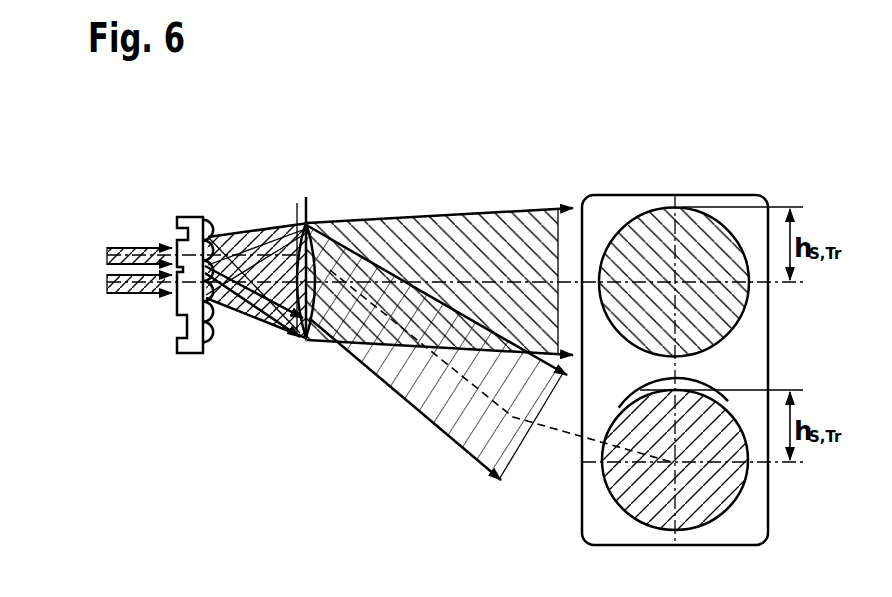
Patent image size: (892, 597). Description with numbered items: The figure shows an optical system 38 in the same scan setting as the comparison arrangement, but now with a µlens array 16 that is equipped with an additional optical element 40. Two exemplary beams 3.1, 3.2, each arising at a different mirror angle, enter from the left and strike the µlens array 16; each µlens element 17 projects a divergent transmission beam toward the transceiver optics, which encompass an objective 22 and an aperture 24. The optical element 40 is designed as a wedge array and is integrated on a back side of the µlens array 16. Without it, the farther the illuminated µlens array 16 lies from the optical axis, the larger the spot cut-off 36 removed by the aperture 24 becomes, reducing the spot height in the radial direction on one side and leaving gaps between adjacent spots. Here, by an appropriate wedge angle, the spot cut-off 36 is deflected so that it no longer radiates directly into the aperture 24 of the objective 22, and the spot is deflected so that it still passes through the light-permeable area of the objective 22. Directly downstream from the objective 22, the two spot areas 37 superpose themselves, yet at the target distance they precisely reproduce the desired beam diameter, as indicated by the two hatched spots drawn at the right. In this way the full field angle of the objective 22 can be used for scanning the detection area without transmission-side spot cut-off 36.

The beam 3.1 is at (110, 282).
The beam 3.2 is at (122, 247).
The µlens array 16 is at (214, 187).
The µlens element 17 is at (205, 220).
The objective 22 is at (300, 322).
The aperture 24 is at (307, 200).
The spot cut-off 36 is at (527, 390).
The spot area 37 is at (413, 392).
The optical system 38 is at (457, 69).
The optical element 40 is at (167, 334).